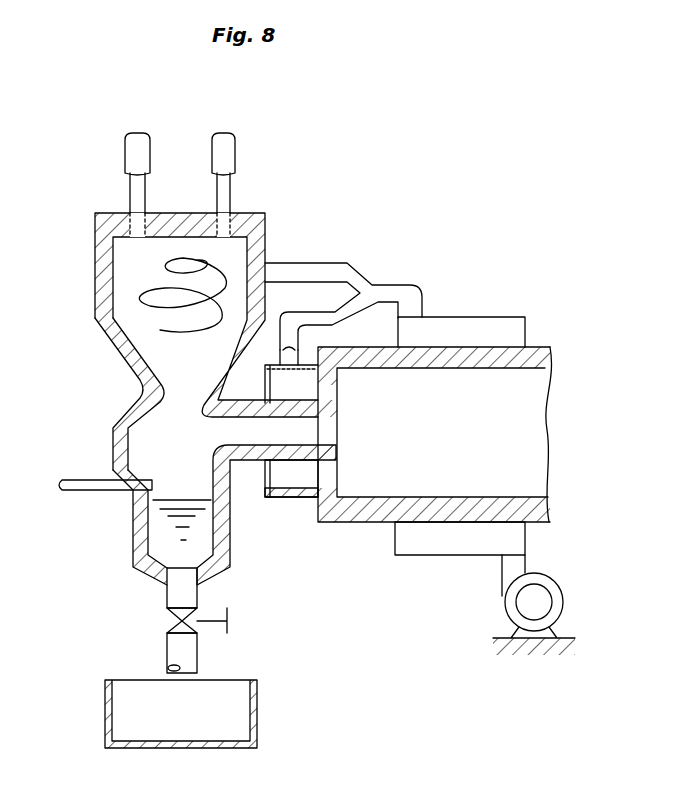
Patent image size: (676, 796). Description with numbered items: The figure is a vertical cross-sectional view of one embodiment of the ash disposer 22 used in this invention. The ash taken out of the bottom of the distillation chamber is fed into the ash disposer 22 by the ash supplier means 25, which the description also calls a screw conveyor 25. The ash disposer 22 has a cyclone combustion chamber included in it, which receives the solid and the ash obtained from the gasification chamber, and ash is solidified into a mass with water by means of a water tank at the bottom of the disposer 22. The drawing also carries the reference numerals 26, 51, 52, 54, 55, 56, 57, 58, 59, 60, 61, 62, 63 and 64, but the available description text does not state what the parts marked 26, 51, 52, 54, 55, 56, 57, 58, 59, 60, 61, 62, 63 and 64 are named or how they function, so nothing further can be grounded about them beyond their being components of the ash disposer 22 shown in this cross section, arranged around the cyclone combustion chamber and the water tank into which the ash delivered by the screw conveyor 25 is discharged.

The ash disposer 22 is at (361, 144).
The ash supplier means 25 is at (235, 157).
The collecting vessel 26 is at (257, 710).
The mixing chamber 51 is at (122, 278).
The liquid inlet pipe 52 is at (125, 158).
The overflow conduit 54 is at (330, 265).
The constricted neck 55 is at (178, 398).
The lower chamber 56 is at (148, 545).
The support plate 57 is at (73, 492).
The valve 58 is at (229, 613).
The outlet tube 59 is at (197, 650).
The return passage 60 is at (243, 465).
The housing 61 is at (490, 385).
The connecting pipe 62 is at (325, 320).
The pump 63 is at (563, 598).
The outlet block 64 is at (445, 558).